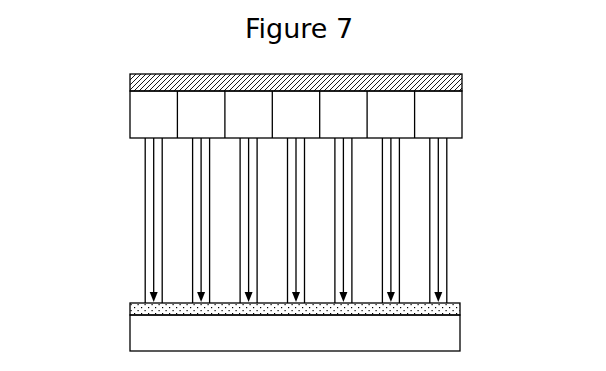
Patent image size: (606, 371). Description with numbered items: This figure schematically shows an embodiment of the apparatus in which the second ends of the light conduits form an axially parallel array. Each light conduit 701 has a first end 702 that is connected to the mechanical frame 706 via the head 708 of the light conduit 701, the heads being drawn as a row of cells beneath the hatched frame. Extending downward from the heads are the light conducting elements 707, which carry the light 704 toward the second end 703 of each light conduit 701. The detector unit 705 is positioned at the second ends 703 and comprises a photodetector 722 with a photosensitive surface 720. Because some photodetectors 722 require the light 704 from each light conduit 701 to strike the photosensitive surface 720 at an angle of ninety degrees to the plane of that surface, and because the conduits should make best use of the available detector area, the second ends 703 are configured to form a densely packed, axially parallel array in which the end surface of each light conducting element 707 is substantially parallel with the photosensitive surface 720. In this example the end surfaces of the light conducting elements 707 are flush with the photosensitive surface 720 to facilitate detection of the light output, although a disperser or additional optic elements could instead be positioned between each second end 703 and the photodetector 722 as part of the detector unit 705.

The light conduit 701 is at (109, 218).
The first end 702 is at (120, 150).
The second end 703 is at (124, 290).
The light 704 is at (438, 217).
The detector unit 705 is at (102, 345).
The mechanical frame 706 is at (453, 82).
The light conducting element 707 is at (447, 185).
The head 708 is at (143, 113).
The photosensitive surface 720 is at (450, 310).
The photodetector 722 is at (295, 333).